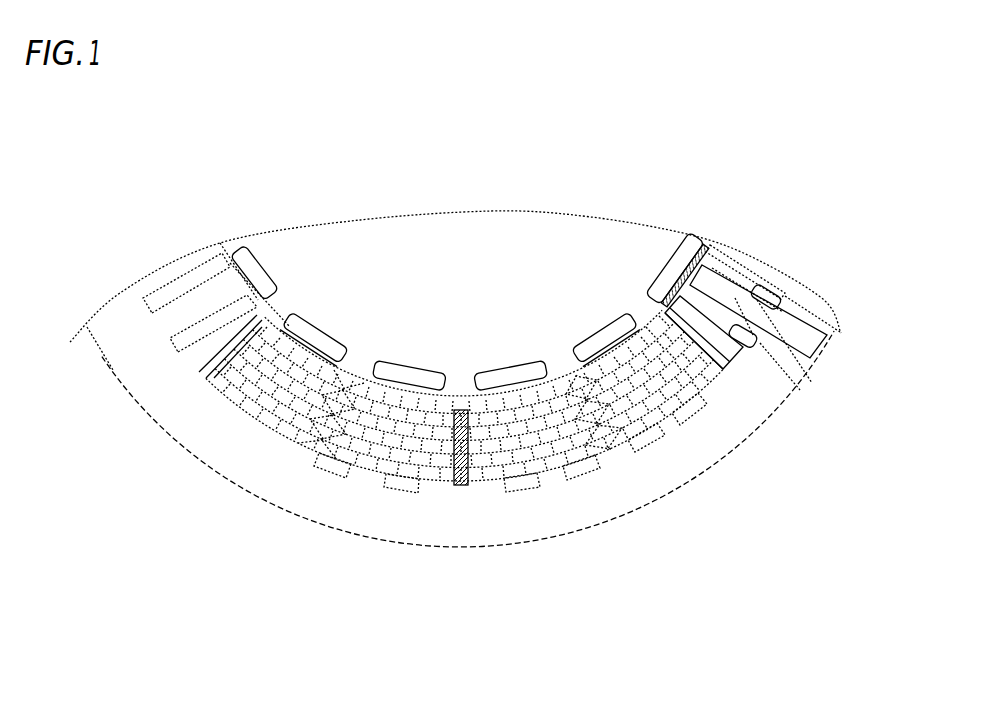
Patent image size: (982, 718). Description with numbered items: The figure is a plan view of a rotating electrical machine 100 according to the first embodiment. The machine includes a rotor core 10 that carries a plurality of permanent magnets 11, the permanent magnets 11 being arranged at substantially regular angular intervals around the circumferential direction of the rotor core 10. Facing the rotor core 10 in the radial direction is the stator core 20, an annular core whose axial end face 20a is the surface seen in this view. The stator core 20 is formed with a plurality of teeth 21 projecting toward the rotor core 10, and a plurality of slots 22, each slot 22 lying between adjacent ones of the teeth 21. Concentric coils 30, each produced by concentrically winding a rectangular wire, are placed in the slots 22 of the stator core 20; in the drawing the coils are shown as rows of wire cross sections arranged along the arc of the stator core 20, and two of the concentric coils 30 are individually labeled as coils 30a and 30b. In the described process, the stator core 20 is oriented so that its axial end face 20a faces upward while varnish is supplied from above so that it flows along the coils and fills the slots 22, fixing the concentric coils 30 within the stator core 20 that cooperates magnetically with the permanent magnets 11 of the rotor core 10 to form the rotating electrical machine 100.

The rotating electrical machine 100 is at (676, 156).
The rotor core 10 is at (648, 250).
The permanent magnets 11 is at (505, 368).
The stator core 20 is at (535, 532).
The axial end face 20a is at (576, 512).
The teeth 21 is at (805, 363).
The slots 22 is at (830, 338).
The concentric coils 30 is at (483, 445).
The coil (first) 30a is at (619, 440).
The coil (second) 30b is at (343, 450).